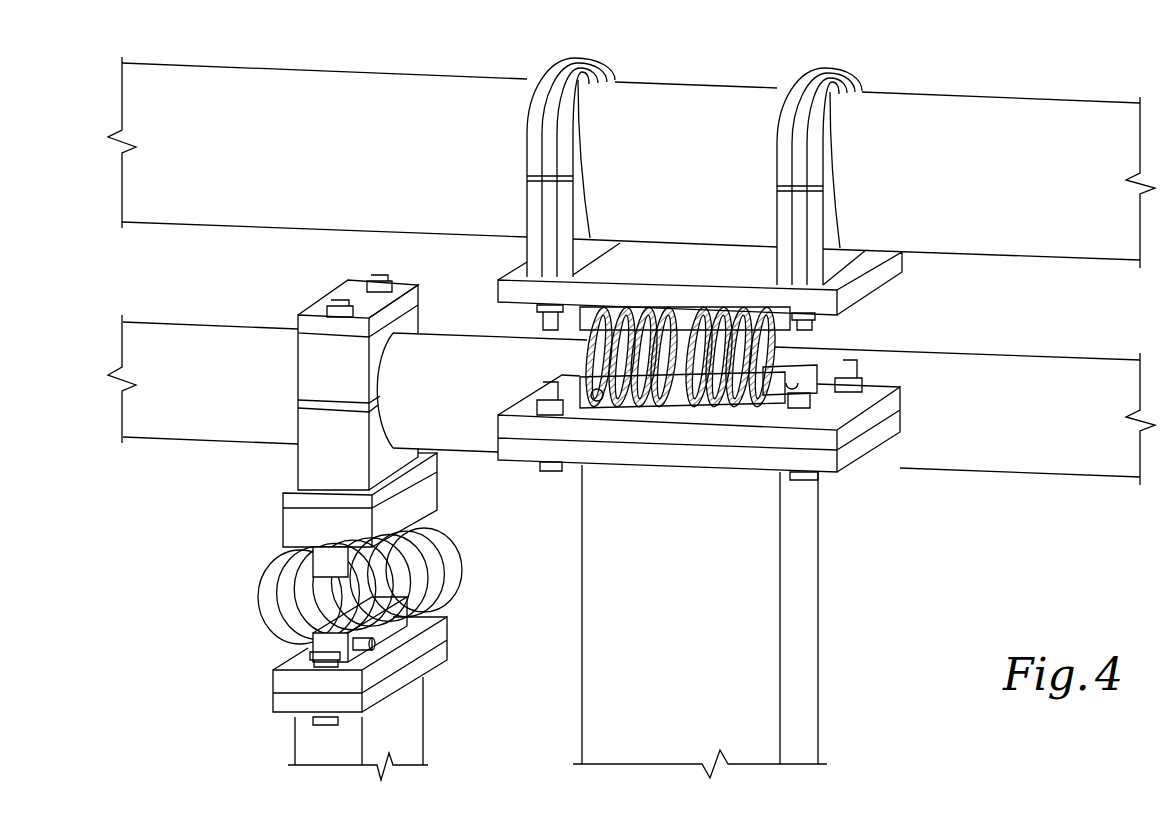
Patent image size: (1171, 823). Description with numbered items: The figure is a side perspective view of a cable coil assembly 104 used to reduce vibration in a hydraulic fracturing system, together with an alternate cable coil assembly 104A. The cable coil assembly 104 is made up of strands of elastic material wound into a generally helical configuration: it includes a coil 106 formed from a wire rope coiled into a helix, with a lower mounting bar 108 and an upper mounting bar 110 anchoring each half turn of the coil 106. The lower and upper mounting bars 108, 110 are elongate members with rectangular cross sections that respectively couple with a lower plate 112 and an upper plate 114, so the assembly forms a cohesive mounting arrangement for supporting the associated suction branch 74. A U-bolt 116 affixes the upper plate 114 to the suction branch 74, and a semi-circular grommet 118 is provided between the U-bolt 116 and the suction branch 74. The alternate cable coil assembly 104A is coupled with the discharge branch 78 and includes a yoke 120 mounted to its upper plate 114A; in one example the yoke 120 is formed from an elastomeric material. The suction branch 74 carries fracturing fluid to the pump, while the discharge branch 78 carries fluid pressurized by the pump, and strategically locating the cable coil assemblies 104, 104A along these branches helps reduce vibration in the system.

The suction branch 74 is at (223, 66).
The discharge branch 78 is at (223, 326).
The cable coil assembly 104 is at (886, 502).
The cable coil assembly 104A is at (229, 655).
The coil 106 is at (588, 352).
The lower mounting bar 108 is at (685, 410).
The upper mounting bar 110 is at (682, 320).
The lower plate 112 is at (893, 402).
The upper plate 114 is at (885, 272).
The upper plate 114A is at (292, 500).
The U-bolt 116 is at (577, 56).
The semi-circular grommet 118 is at (548, 60).
The yoke 120 is at (298, 465).